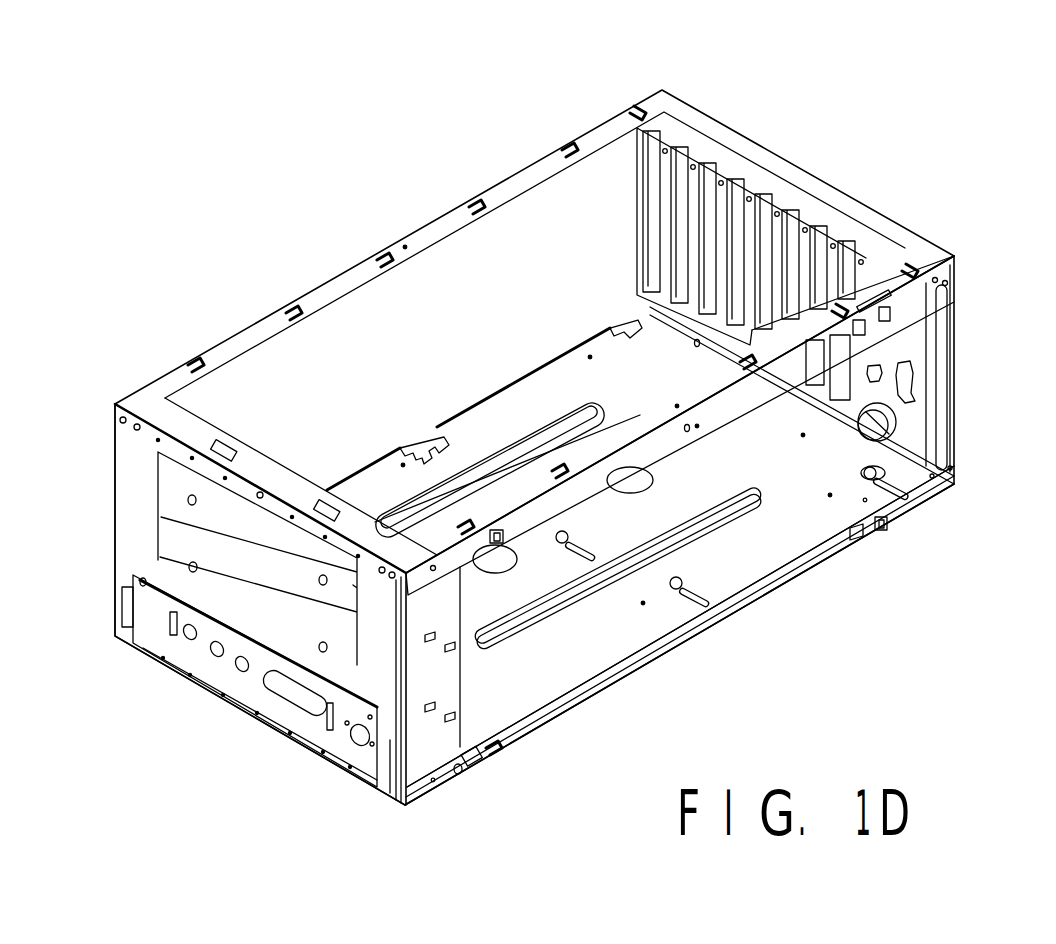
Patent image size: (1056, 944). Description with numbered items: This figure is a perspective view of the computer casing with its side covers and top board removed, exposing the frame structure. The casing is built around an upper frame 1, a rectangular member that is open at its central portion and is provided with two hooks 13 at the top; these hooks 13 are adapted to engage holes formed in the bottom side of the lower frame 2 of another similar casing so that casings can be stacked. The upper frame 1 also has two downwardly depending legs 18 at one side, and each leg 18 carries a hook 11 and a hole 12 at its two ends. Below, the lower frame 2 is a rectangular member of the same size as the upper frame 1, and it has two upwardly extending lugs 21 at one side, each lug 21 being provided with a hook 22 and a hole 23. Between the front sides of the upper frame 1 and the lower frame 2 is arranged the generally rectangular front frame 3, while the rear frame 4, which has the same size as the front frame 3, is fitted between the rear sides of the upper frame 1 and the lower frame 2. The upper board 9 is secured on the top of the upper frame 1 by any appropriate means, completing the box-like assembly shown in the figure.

The upper frame 1 is at (818, 190).
The lower frame 2 is at (770, 597).
The front frame 3 is at (132, 495).
The rear frame 4 is at (630, 637).
The upper board 9 is at (917, 365).
The hook 11 is at (477, 567).
The hole 12 is at (503, 543).
The hooks 13 is at (563, 148).
The downwardly depending legs 18 is at (835, 345).
The upwardly extending lugs 21 is at (725, 613).
The hook 22 is at (883, 530).
The hole 23 is at (857, 538).